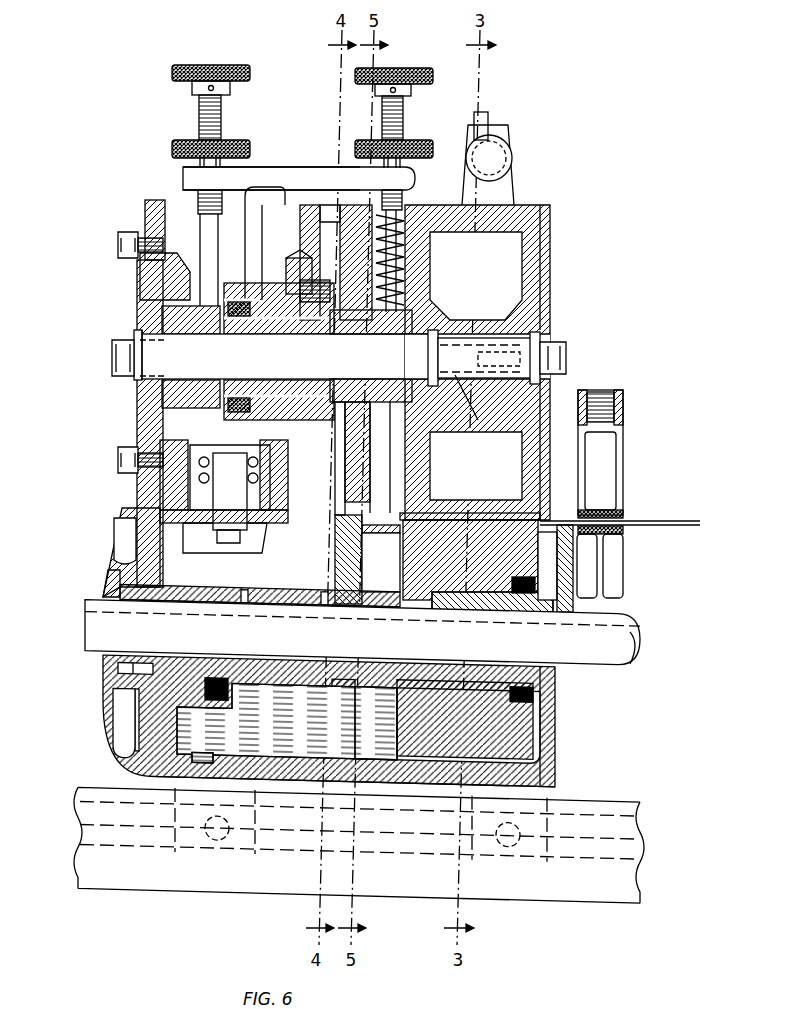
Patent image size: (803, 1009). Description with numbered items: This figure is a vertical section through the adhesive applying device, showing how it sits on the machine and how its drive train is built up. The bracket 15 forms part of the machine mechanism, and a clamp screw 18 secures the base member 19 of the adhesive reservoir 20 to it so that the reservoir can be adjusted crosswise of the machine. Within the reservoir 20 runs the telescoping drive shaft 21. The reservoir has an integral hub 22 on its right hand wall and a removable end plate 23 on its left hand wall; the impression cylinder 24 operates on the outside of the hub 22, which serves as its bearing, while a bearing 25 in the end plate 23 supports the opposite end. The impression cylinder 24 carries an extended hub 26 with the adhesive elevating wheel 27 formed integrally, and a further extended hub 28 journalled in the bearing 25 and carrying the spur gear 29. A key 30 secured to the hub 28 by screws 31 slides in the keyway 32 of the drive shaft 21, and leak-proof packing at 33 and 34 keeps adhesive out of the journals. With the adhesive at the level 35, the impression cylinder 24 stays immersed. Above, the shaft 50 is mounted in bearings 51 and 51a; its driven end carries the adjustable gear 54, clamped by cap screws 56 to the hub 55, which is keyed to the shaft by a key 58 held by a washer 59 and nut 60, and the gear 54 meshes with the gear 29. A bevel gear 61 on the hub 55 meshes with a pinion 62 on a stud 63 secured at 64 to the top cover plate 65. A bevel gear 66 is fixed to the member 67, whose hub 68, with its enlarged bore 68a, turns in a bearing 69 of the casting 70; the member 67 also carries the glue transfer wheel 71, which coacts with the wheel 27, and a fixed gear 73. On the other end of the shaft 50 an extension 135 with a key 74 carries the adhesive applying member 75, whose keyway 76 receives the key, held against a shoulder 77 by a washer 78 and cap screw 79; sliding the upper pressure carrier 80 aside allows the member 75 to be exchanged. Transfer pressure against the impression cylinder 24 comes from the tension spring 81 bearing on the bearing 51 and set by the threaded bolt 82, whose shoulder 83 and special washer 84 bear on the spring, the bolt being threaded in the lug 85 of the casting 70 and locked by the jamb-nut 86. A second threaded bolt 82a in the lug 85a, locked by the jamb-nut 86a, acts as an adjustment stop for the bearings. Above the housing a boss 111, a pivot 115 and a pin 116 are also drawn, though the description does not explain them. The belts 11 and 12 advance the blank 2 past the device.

The blank 2 is at (700, 526).
The belt 11 is at (623, 518).
The belt 12 is at (623, 533).
The bracket 15 is at (625, 889).
The clamp screw 18 is at (210, 838).
The base member 19 is at (556, 787).
The adhesive reservoir 20 is at (556, 751).
The telescoping drive shaft 21 is at (632, 630).
The integral hub 22 is at (556, 677).
The end plate 23 is at (112, 730).
The impression cylinder 24 is at (556, 724).
The bearing 25 is at (118, 682).
The extended hub 26 is at (380, 600).
The adhesive elevating wheel 27 is at (340, 549).
The further extended hub 28 is at (180, 599).
The spur gear 29 is at (130, 538).
The key 30 is at (280, 599).
The screws 31 is at (247, 586).
The keyway 32 is at (640, 612).
The leak-proof packing 33 is at (556, 696).
The leak-proof packing 34 is at (106, 574).
The adhesive level 35 is at (380, 600).
The shaft 50 is at (386, 402).
The bearing 51 is at (400, 334).
The bearing 51a is at (191, 357).
The adjustable gear 54 is at (146, 207).
The hub 55 is at (138, 394).
The cap screws 56 is at (119, 242).
The key 58 is at (135, 334).
The washer 59 is at (135, 374).
The nut 60 is at (113, 353).
The bevel gear 61 is at (141, 270).
The pinion 62 is at (175, 492).
The stud 63 is at (228, 470).
The securing point 64 is at (240, 528).
The top cover plate 65 is at (467, 562).
The bevel gear 66 is at (286, 266).
The member 67 is at (345, 449).
The hub 68 is at (279, 351).
The enlarged bore 68a is at (250, 334).
The bearing 69 is at (301, 322).
The casting 70 is at (278, 182).
The glue transfer wheel 71 is at (350, 506).
The fixed gear 73 is at (302, 229).
The key 74 is at (470, 335).
The adhesive applying member 75 is at (550, 251).
The keyway 76 is at (545, 300).
The shoulder 77 is at (432, 330).
The washer 78 is at (545, 341).
The cap screw 79 is at (560, 366).
The upper pressure carrier 80 is at (610, 459).
The tension spring 81 is at (404, 263).
The threaded bolt 82 is at (404, 109).
The threaded bolt 82a is at (199, 110).
The shoulder 83 is at (400, 195).
The special washer 84 is at (404, 212).
The lug 85 is at (380, 185).
The lug 85a is at (184, 180).
The jamb-nut 86 is at (410, 150).
The jamb-nut 86a is at (173, 147).
The boss 111 is at (486, 195).
The pivot 115 is at (492, 140).
The pin 116 is at (486, 118).
The extension 135 is at (479, 408).